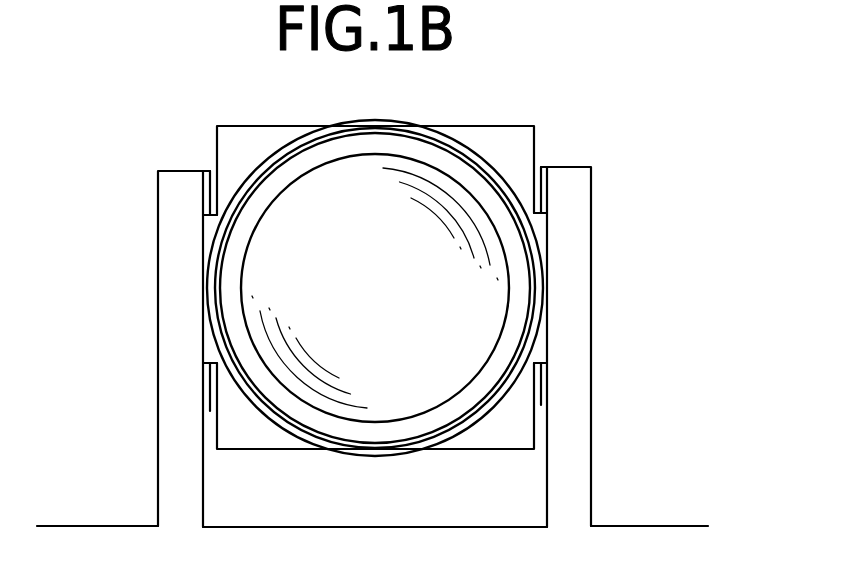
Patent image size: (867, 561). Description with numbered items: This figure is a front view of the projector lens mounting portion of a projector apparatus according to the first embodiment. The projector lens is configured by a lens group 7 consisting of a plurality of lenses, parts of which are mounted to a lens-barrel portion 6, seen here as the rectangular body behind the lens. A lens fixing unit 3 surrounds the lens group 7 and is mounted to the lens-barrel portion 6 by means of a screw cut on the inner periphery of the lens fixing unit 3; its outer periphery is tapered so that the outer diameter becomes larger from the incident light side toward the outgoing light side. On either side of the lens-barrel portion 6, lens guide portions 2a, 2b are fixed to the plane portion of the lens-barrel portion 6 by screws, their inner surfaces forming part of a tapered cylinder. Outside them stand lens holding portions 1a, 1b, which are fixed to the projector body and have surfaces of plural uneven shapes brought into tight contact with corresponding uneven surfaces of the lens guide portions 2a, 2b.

The lens holding portion 1a is at (168, 373).
The lens holding portion 1b is at (585, 370).
The lens guide portion 2a is at (210, 232).
The lens guide portion 2b is at (540, 225).
The lens fixing unit 3 is at (248, 175).
The lens-barrel portion 6 is at (527, 133).
The lens group 7 is at (453, 192).